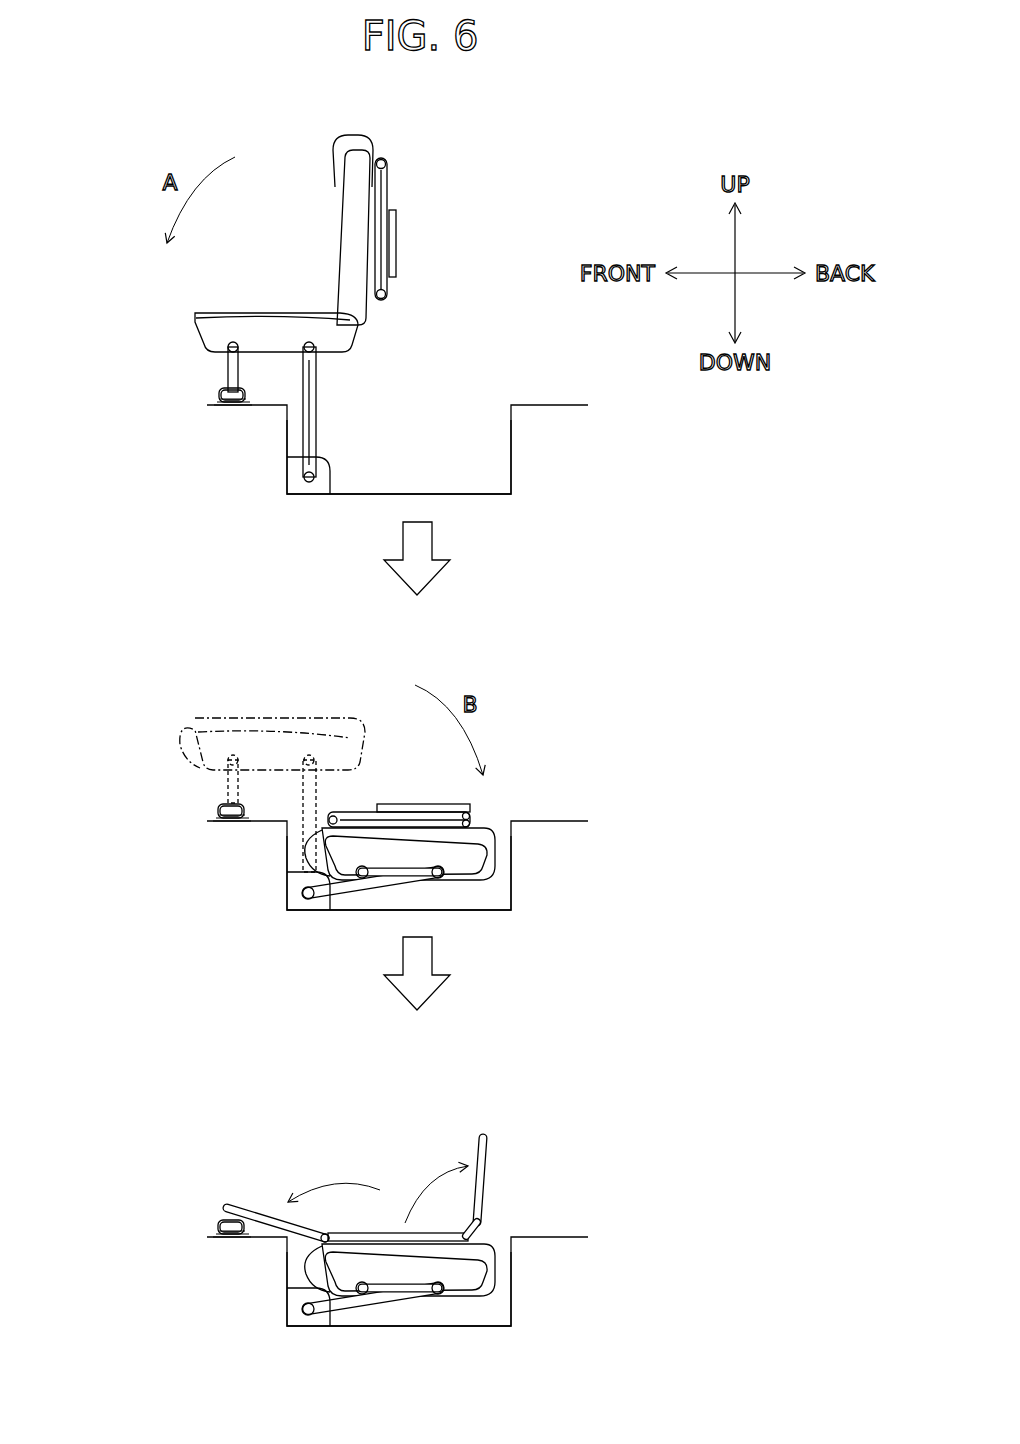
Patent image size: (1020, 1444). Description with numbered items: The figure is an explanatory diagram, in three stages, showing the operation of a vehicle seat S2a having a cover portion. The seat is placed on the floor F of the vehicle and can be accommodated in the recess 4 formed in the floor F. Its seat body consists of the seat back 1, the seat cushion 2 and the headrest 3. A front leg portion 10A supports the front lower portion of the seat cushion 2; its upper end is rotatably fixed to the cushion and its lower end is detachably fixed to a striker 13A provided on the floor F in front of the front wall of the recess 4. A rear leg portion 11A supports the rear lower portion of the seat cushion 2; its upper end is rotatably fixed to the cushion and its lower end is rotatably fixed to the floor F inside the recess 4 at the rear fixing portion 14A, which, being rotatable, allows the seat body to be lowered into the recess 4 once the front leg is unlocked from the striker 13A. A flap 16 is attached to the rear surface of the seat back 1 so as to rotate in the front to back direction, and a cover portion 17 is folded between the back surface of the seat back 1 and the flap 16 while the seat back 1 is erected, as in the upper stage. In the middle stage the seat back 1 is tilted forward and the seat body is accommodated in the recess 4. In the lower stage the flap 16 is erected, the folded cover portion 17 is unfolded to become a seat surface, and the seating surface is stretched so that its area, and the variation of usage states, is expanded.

The seat back 1 is at (350, 239).
The seat cushion 2 is at (231, 312).
The headrest 3 is at (336, 147).
The recess 4 is at (482, 418).
The flap 16 is at (396, 250).
The cover portion 17 is at (390, 182).
The front leg portion 10A is at (233, 376).
The rear leg portion 11A is at (309, 378).
The striker 13A is at (232, 823).
The rear fixing portion 14A is at (300, 490).
The floor F is at (557, 405).
The vehicle seat S2a is at (123, 208).